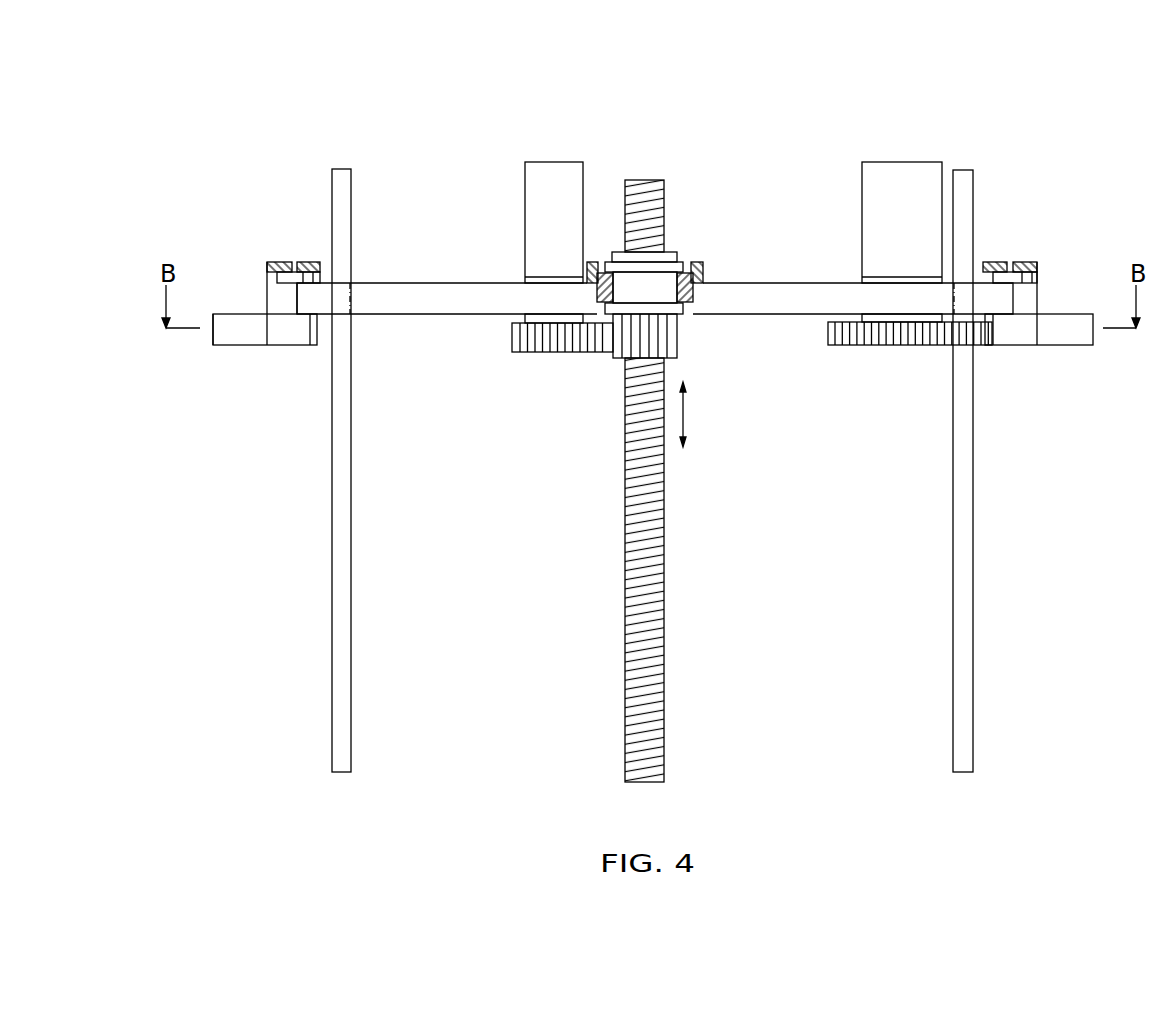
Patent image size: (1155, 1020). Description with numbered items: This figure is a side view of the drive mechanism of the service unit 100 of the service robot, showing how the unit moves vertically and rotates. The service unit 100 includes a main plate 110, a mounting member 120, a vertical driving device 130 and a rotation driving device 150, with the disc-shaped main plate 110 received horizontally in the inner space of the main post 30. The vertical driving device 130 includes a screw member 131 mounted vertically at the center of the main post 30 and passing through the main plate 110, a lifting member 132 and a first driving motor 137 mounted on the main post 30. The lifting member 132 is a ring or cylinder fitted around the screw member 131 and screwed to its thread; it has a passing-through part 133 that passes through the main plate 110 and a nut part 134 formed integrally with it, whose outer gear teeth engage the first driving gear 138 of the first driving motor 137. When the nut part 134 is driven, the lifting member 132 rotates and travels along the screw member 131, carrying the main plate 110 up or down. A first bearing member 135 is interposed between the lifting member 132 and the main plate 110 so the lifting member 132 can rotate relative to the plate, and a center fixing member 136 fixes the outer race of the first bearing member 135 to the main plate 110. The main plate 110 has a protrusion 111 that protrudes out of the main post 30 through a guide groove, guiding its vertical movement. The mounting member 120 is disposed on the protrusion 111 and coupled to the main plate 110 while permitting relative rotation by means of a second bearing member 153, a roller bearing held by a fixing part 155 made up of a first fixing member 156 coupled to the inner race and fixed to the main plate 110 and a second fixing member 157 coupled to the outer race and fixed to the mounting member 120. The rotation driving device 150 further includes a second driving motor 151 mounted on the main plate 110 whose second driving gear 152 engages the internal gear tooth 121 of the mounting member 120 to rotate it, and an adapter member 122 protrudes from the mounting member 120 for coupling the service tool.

The service unit 100 is at (303, 110).
The main plate 110 is at (742, 283).
The protrusion 111 is at (297, 294).
The mounting member 120 is at (653, 360).
The internal gear tooth 121 is at (313, 348).
The adapter member 122 is at (250, 348).
The vertical driving device 130 is at (681, 481).
The screw member 131 is at (717, 648).
The lifting member 132 is at (585, 356).
The passing-through part 133 is at (633, 298).
The nut part 134 is at (623, 355).
The first bearing member 135 is at (692, 300).
The center fixing member 136 is at (593, 262).
The first driving motor 137 is at (552, 172).
The first driving gear 138 is at (512, 335).
The rotation driving device 150 is at (910, 234).
The second driving motor 151 is at (900, 172).
The second driving gear 152 is at (855, 348).
The second bearing member 153 is at (276, 275).
The fixing part 155 is at (645, 207).
The first fixing member 156 is at (312, 262).
The second fixing member 157 is at (280, 262).
The main post 30 is at (346, 583).